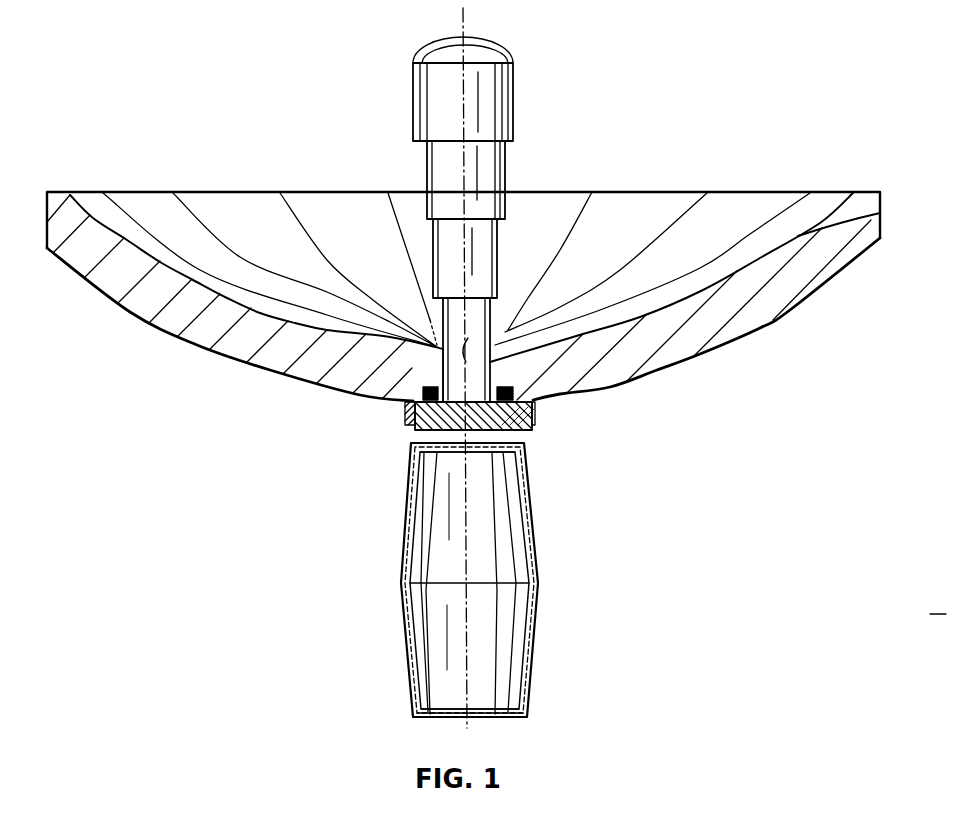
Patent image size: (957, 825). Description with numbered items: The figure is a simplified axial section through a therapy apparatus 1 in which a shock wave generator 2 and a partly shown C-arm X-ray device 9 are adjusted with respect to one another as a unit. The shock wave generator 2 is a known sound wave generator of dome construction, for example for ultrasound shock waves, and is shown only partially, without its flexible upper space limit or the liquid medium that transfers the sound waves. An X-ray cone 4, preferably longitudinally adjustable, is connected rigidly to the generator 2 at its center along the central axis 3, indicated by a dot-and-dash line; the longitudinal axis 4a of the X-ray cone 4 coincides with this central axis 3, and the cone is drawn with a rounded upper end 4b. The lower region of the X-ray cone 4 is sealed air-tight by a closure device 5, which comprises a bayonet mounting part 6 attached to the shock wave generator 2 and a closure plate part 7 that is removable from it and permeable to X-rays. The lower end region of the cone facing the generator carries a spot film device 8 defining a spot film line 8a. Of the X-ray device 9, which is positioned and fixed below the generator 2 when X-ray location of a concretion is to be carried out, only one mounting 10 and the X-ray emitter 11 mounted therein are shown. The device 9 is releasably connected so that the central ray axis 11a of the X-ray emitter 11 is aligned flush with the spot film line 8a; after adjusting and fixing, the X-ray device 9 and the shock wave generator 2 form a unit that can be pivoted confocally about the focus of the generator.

The therapy apparatus 1 is at (297, 388).
The shock wave generator 2 is at (749, 306).
The central axis 3 is at (452, 30).
The X-ray cone 4 is at (486, 88).
The longitudinal axis 4a is at (468, 175).
The cap dome 4b is at (481, 43).
The closure device 5 is at (406, 430).
The bayonet mounting part 6 is at (533, 409).
The closure plate part 7 is at (513, 436).
The spot film device 8 is at (490, 352).
The spot film line 8a is at (437, 343).
The X-ray device 9 is at (398, 627).
The mounting 10 is at (534, 526).
The X-ray emitter 11 is at (504, 626).
The central ray axis 11a is at (475, 723).